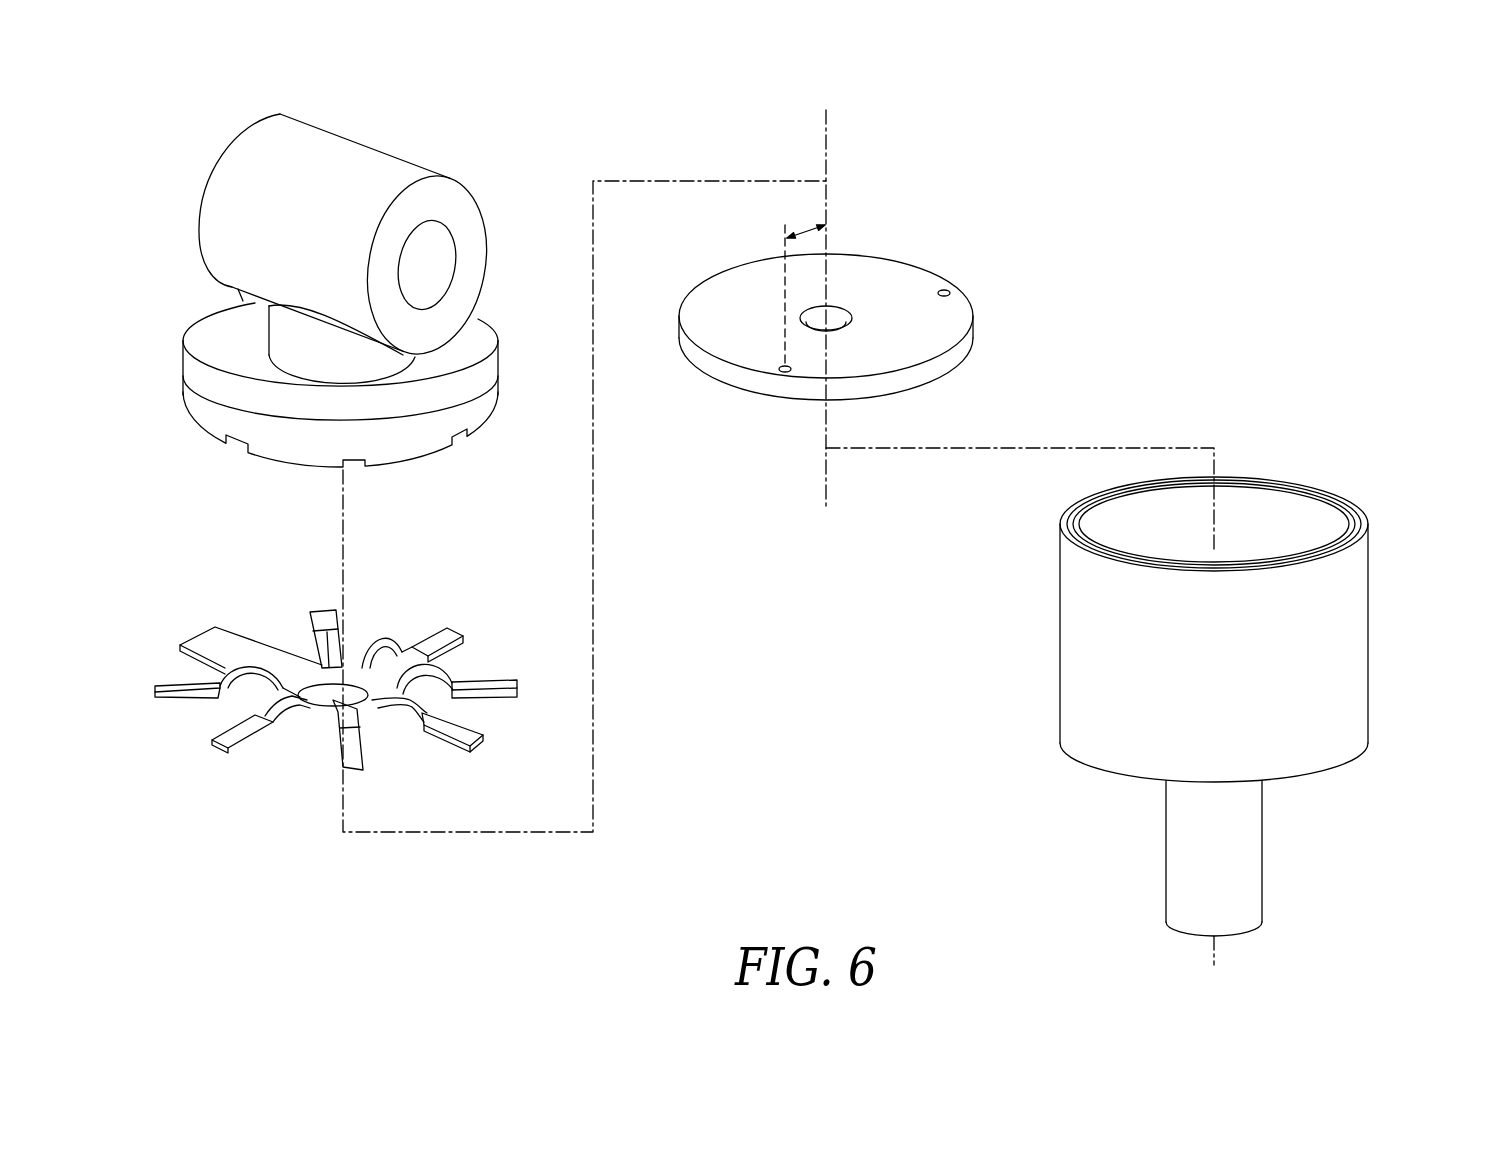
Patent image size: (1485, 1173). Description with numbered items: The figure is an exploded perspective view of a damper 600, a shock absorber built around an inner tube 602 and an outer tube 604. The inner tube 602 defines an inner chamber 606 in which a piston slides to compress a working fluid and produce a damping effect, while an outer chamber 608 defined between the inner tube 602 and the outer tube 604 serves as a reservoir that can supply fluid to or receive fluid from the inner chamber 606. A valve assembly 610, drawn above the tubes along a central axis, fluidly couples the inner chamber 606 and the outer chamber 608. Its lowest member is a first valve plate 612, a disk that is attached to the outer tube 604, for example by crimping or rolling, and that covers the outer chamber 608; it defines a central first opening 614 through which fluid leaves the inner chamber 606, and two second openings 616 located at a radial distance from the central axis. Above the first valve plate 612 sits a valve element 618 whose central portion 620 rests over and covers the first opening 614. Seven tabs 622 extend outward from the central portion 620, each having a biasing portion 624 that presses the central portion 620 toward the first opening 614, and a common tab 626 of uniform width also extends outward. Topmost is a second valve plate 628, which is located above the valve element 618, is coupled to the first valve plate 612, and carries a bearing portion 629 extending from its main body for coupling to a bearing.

The damper 600 is at (200, 123).
The inner tube 602 is at (1298, 497).
The outer tube 604 is at (1061, 678).
The inner chamber 606 is at (1105, 528).
The outer chamber 608 is at (1367, 503).
The valve assembly 610 is at (519, 149).
The first valve plate 612 is at (965, 265).
The first opening 614 is at (840, 318).
The second opening 616 is at (950, 292).
The valve element 618 is at (157, 660).
The central portion 620 is at (312, 714).
The tab 622 is at (222, 750).
The biasing portion 624 is at (375, 712).
The common tab 626 is at (203, 636).
The second valve plate 628 is at (174, 390).
The bearing portion 629 is at (205, 193).